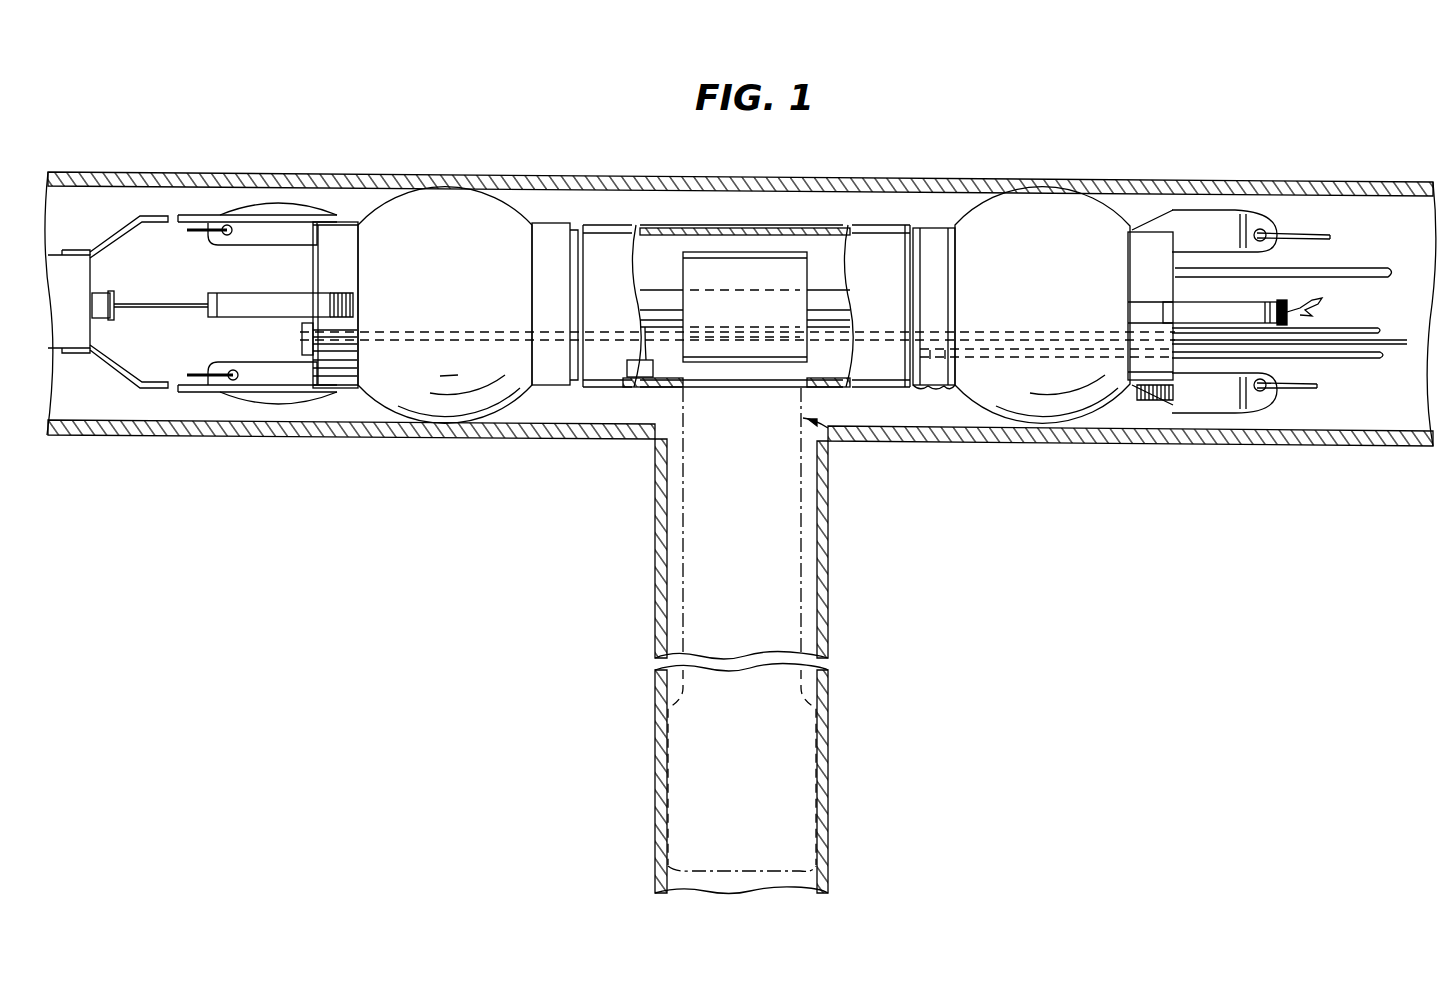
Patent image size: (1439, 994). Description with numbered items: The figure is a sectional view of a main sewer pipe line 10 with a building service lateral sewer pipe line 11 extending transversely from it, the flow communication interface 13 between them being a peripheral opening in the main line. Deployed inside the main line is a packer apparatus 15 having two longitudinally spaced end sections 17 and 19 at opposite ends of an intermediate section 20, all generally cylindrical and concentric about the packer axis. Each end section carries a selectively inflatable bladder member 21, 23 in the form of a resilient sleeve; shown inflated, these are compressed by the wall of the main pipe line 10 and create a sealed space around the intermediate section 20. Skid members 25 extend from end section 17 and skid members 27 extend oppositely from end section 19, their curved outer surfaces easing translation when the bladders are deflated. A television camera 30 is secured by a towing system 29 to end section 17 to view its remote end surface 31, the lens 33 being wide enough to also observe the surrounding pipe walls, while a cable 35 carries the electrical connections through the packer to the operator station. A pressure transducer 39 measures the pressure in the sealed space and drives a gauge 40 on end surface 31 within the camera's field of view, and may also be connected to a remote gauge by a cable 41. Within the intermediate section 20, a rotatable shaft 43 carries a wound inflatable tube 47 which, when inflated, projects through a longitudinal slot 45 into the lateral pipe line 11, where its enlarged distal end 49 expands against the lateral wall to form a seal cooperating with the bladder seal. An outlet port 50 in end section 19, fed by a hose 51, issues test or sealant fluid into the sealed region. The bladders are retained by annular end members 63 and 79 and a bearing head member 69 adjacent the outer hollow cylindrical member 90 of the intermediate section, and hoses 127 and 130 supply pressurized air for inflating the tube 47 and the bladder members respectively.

The main sewer pipe line 10 is at (176, 437).
The building service lateral sewer pipe line 11 is at (653, 606).
The flow communication interface 13 is at (840, 432).
The packer apparatus 15 is at (1325, 215).
The end section 17 is at (548, 205).
The end section 19 is at (1118, 420).
The intermediate section 20 is at (778, 207).
The inflatable bladder member 21 is at (510, 416).
The inflatable bladder member 23 is at (1105, 205).
The skid members 25 is at (285, 212).
The skid members 27 is at (1218, 218).
The towing system 29 is at (128, 230).
The television camera 30 is at (83, 310).
The remote end surface 31 is at (313, 274).
The lens 33 is at (105, 292).
The cable 35 is at (176, 304).
The pressure transducer 39 is at (638, 379).
The gauge 40 is at (300, 342).
The cable 41 is at (1405, 346).
The rotatable shaft 43 is at (656, 297).
The slot 45 is at (826, 397).
The inflatable elongated tube 47 is at (822, 553).
The distal end 49 is at (830, 873).
The outlet port 50 is at (935, 392).
The hose 51 is at (1344, 359).
The annular end member 63 is at (1160, 240).
The bearing head member 69 is at (930, 236).
The annular end member 79 is at (350, 244).
The outer hollow cylindrical member 90 is at (692, 229).
The hose 127 is at (1345, 270).
The hose 130 is at (1306, 316).